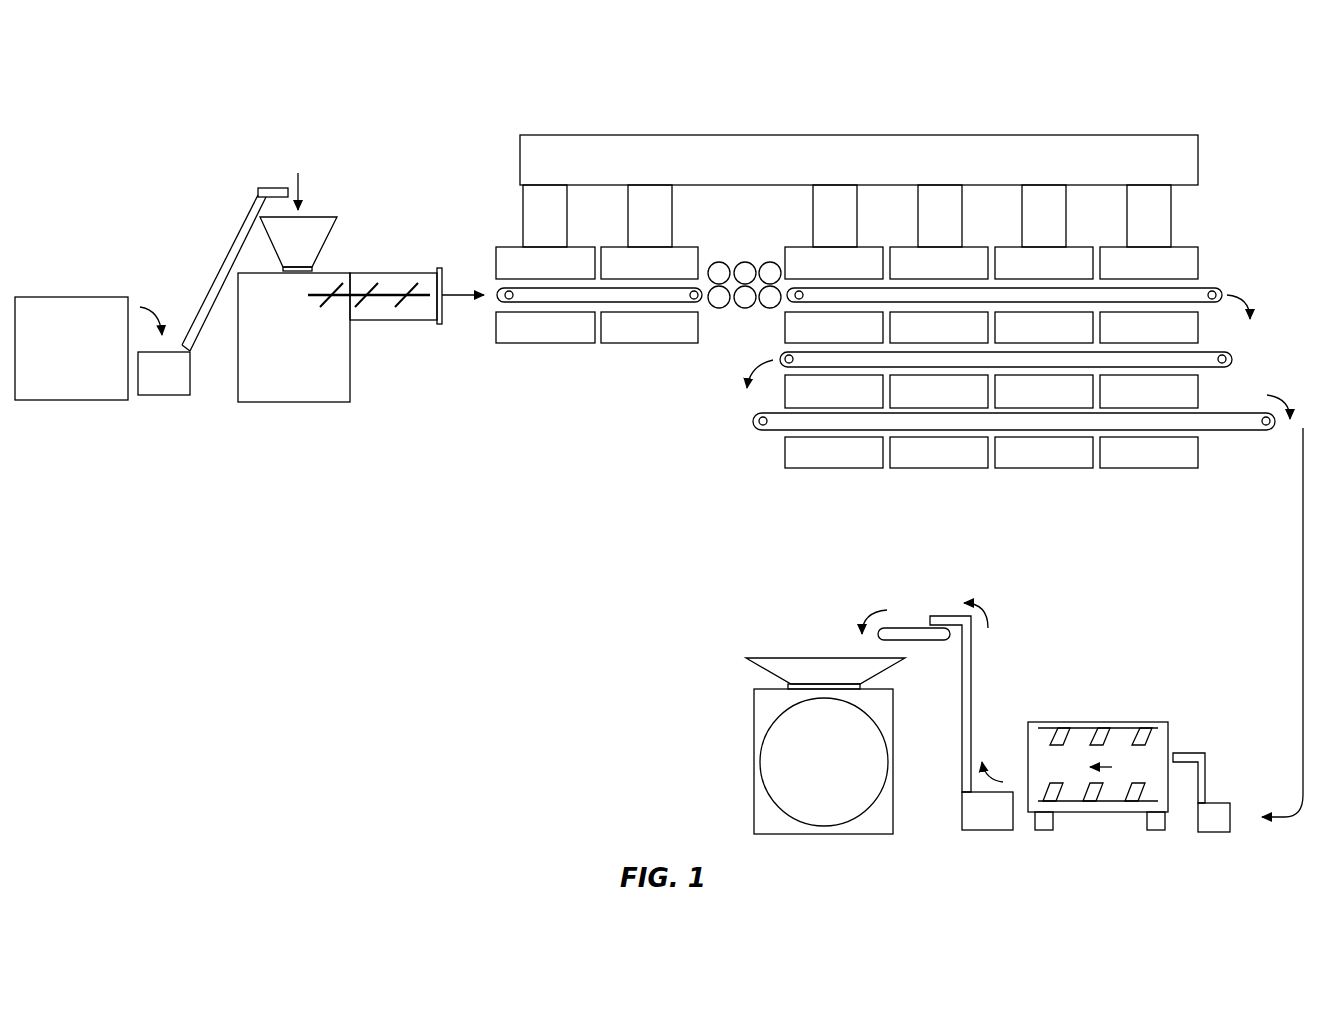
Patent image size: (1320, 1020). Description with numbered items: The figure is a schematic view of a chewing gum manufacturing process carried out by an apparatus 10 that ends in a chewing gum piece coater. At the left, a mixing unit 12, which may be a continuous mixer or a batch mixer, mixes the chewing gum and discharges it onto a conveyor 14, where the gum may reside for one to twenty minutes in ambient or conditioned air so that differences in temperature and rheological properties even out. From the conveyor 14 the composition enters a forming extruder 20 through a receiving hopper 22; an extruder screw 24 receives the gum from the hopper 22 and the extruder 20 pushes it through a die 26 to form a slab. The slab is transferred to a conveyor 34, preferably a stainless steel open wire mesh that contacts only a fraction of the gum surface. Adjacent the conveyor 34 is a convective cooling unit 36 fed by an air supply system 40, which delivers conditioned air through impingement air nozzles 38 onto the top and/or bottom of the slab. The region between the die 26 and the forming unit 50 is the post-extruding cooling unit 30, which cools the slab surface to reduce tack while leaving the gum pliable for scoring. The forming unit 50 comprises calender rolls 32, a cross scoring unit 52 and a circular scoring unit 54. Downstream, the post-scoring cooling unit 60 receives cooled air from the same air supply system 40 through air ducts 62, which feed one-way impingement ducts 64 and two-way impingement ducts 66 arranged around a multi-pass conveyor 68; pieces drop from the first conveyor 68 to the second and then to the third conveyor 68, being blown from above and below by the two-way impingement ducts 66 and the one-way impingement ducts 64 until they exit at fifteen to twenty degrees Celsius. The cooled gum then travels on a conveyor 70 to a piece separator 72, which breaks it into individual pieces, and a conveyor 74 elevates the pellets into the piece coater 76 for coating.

The apparatus 10 is at (536, 100).
The mixing unit 12 is at (58, 362).
The conveyor 14 is at (163, 383).
The forming extruder 20 is at (280, 353).
The receiving hopper 22 is at (284, 255).
The extruder screw 24 is at (395, 292).
The die 26 is at (440, 323).
The post-extruding cooling unit 30 is at (575, 320).
The calender rolls 32 is at (719, 262).
The conveyor 34 is at (519, 292).
The convective cooling unit 36 is at (531, 229).
The impingement air nozzles 38 is at (531, 276).
The air supply system 40 is at (845, 173).
The forming unit 50 is at (721, 307).
The cross scoring unit 52 is at (745, 262).
The circular scoring unit 54 is at (782, 254).
The post-scoring cooling unit 60 is at (1029, 364).
The air ducts 62 is at (821, 229).
The one-way impingement ducts 64 is at (820, 276).
The two-way impingement ducts 66 is at (820, 341).
The conveyor 68 is at (1203, 287).
The conveyor 70 is at (1212, 813).
The piece separator 72 is at (1098, 722).
The conveyor 74 is at (974, 824).
The piece coater 76 is at (810, 775).